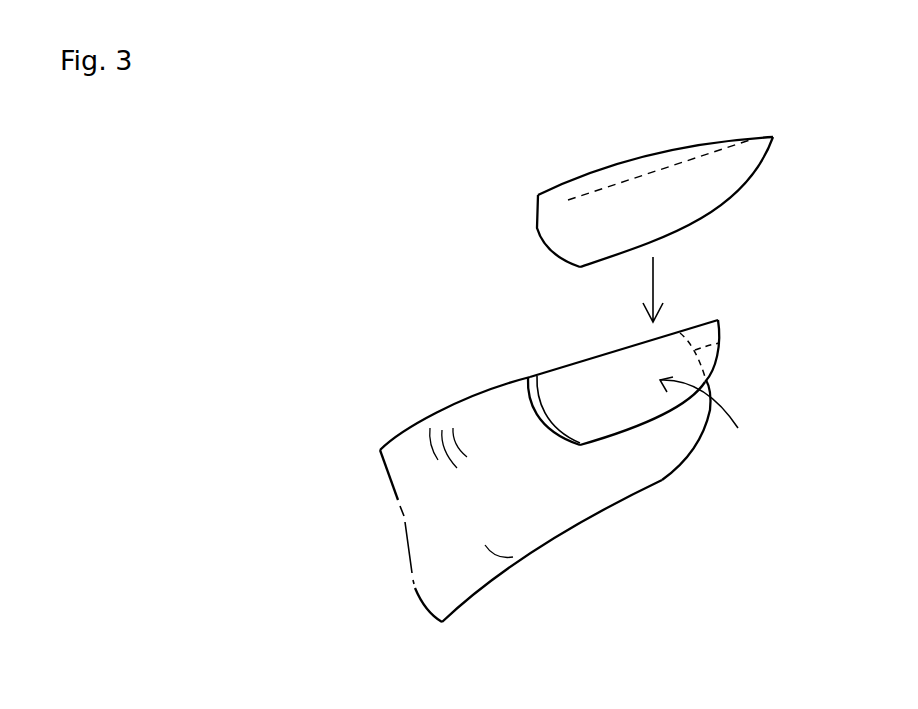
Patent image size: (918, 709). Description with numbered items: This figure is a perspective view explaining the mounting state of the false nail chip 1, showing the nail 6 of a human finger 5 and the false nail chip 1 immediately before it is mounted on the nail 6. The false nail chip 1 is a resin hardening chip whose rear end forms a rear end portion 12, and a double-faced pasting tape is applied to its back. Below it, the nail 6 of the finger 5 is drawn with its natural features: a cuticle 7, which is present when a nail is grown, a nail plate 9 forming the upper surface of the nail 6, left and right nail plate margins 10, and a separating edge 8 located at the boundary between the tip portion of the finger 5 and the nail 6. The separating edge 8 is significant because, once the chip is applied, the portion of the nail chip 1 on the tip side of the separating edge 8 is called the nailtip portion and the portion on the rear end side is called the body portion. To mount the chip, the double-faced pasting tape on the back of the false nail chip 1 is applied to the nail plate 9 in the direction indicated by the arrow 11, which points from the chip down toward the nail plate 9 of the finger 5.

The false nail chip 1 is at (632, 197).
The rear end portion 12 is at (538, 232).
The arrow 11 is at (653, 282).
The finger 5 is at (450, 500).
The nail plate 9 is at (585, 370).
The nail plate margins 10 is at (627, 430).
The cuticle 7 is at (535, 408).
The separating edge 8 is at (722, 343).
The nail 6 is at (710, 416).